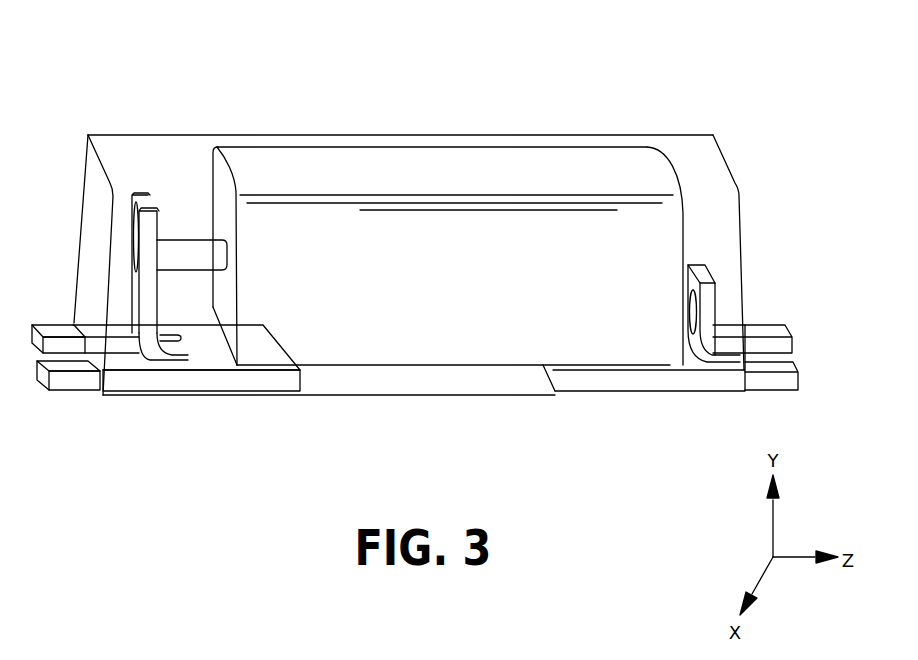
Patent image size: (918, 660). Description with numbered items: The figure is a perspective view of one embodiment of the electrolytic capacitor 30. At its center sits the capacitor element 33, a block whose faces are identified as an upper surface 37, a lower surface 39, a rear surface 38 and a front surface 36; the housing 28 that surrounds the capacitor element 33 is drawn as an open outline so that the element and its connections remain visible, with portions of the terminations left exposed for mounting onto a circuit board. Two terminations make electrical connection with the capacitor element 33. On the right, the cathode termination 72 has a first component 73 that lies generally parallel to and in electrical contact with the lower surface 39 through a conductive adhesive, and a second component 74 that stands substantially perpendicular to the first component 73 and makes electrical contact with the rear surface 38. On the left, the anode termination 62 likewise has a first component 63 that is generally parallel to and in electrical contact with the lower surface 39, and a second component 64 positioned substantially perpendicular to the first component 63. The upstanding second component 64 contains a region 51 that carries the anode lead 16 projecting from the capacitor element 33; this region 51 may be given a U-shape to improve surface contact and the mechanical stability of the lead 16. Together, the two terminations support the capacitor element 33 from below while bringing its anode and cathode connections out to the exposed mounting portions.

The electrolytic capacitor 30 is at (506, 100).
The housing 28 is at (120, 152).
The front surface 36 is at (221, 184).
The upper surface 37 is at (530, 183).
The rear surface 38 is at (682, 227).
The capacitor element 33 is at (467, 297).
The region 51 is at (170, 242).
The second component 64 is at (138, 283).
The anode lead 16 is at (190, 263).
The first component 63 is at (125, 385).
The anode termination 62 is at (185, 412).
The lower surface 39 is at (433, 365).
The first component 73 is at (587, 383).
The cathode termination 72 is at (666, 410).
The second component 74 is at (704, 303).